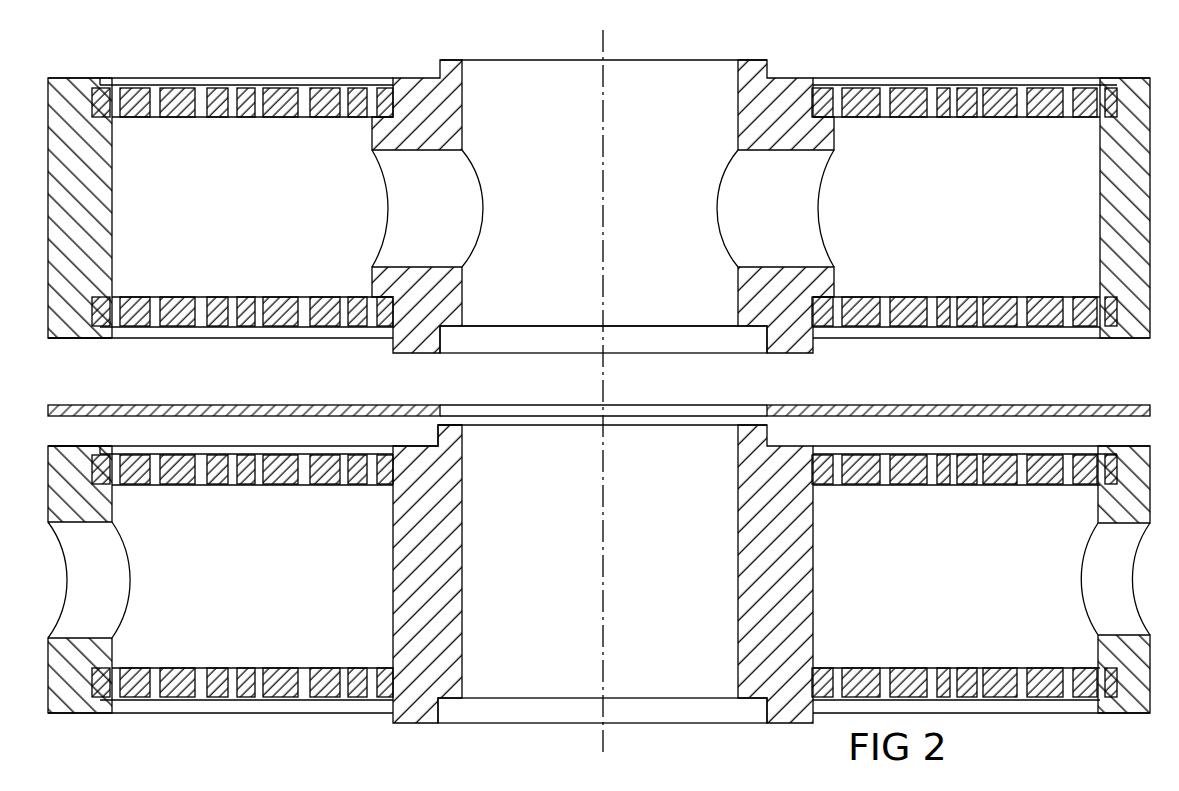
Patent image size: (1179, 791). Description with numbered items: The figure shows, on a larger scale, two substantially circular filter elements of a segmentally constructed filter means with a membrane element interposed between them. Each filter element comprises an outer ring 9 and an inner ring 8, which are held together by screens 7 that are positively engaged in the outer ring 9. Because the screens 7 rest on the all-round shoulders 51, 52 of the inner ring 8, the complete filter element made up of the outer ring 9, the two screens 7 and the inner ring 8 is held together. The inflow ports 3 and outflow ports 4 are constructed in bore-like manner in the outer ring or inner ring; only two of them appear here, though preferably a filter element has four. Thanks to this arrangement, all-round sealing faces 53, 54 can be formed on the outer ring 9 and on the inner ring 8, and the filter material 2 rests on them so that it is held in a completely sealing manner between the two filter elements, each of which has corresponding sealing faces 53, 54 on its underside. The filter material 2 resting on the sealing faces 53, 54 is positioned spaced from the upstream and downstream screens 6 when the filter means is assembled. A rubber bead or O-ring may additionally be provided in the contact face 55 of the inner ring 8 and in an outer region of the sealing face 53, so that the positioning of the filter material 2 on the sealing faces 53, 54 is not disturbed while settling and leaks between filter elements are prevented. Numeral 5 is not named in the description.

The filter material 2 is at (282, 405).
The inflow ports 3 is at (108, 578).
The outflow ports 4 is at (458, 190).
The core flange 5 is at (448, 303).
The upstream and downstream screens 6 is at (103, 663).
The screens 7 is at (604, 423).
The inner ring 8 is at (578, 368).
The outer ring 9 is at (599, 368).
The shoulder 51 is at (373, 108).
The shoulder 52 is at (365, 297).
The sealing face 53 is at (80, 338).
The sealing face 54 is at (785, 440).
The contact face 55 is at (453, 430).